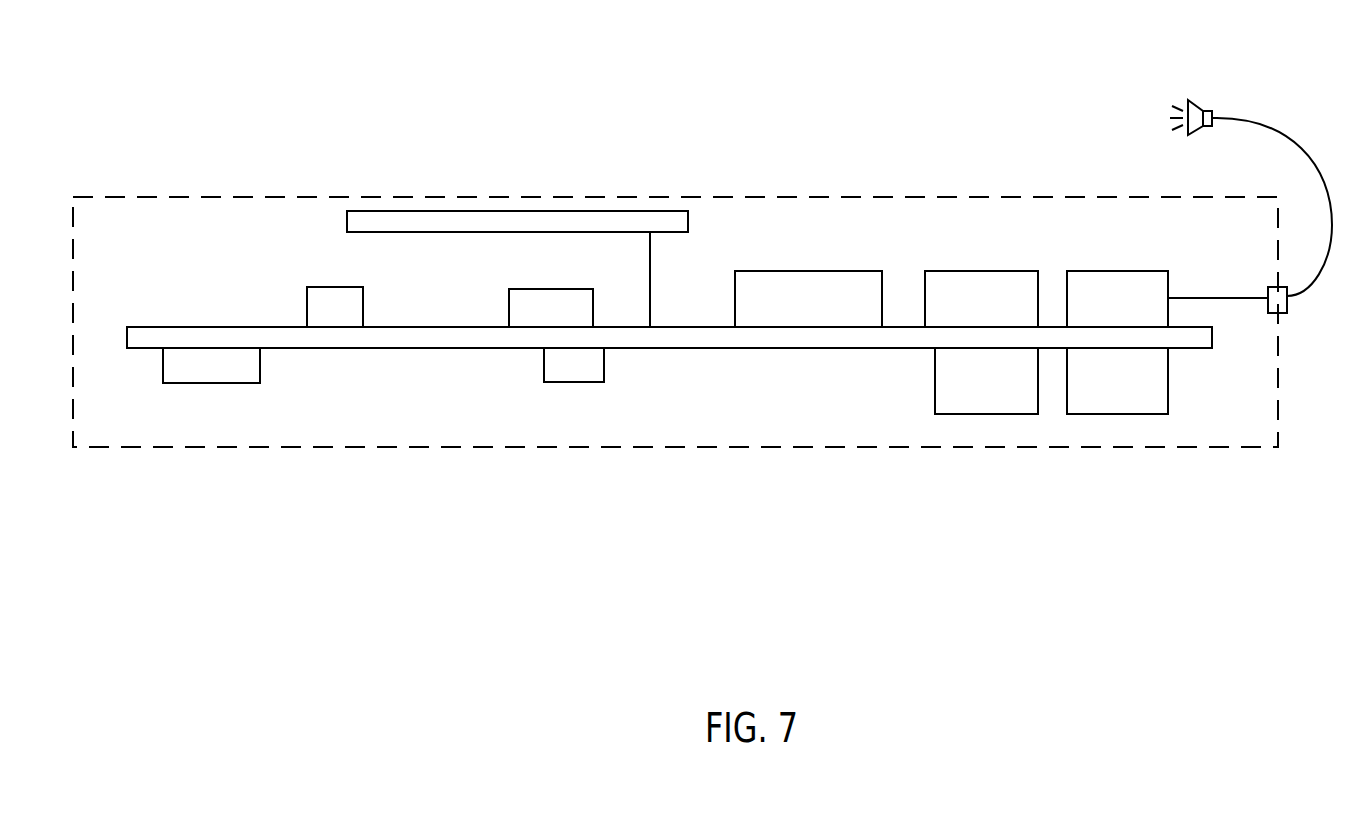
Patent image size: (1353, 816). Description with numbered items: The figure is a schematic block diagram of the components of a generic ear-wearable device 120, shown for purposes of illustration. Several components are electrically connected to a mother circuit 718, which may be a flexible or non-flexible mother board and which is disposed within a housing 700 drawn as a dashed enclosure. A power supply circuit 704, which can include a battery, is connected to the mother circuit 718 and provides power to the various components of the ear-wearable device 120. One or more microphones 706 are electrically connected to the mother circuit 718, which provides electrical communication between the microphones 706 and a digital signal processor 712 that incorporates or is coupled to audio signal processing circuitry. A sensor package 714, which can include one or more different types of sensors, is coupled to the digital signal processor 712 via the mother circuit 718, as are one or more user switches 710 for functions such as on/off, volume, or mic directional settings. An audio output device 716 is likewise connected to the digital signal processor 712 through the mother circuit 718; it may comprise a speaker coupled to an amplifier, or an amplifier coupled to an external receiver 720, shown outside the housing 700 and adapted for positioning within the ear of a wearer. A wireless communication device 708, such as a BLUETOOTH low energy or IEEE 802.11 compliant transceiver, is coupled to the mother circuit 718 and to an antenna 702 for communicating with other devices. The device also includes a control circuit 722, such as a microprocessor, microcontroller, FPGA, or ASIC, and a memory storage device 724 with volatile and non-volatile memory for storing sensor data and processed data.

The ear-wearable device 120 is at (818, 148).
The housing 700 is at (245, 196).
The antenna 702 is at (462, 221).
The power supply circuit 704 is at (212, 365).
The microphones 706 is at (330, 298).
The wireless communication device 708 is at (541, 298).
The user switches 710 is at (578, 365).
The digital signal processor 712 is at (770, 282).
The sensor package 714 is at (955, 282).
The audio output device 716 is at (1090, 282).
The mother circuit 718 is at (758, 339).
The external receiver 720 is at (1195, 101).
The control circuit 722 is at (1152, 385).
The memory storage device 724 is at (950, 377).